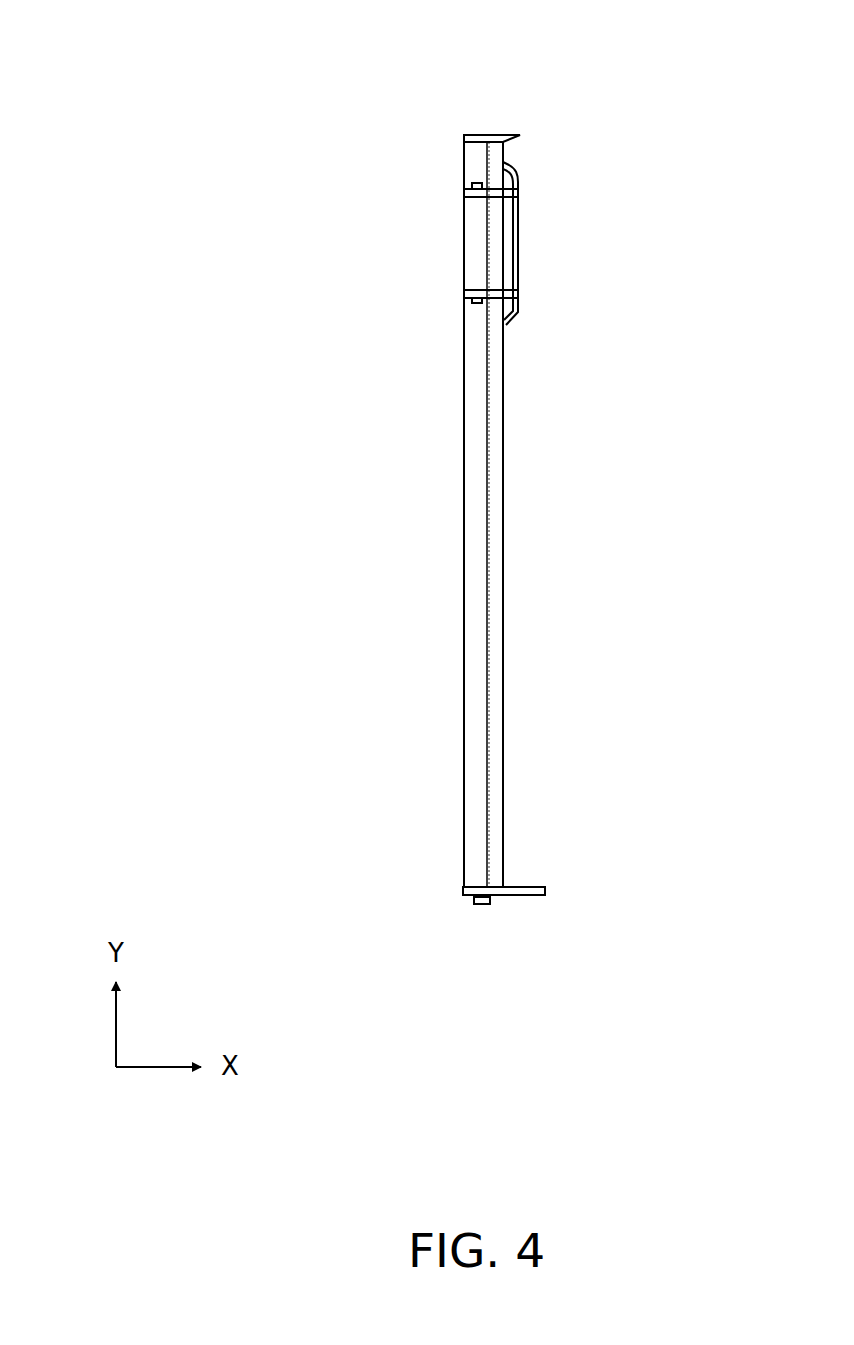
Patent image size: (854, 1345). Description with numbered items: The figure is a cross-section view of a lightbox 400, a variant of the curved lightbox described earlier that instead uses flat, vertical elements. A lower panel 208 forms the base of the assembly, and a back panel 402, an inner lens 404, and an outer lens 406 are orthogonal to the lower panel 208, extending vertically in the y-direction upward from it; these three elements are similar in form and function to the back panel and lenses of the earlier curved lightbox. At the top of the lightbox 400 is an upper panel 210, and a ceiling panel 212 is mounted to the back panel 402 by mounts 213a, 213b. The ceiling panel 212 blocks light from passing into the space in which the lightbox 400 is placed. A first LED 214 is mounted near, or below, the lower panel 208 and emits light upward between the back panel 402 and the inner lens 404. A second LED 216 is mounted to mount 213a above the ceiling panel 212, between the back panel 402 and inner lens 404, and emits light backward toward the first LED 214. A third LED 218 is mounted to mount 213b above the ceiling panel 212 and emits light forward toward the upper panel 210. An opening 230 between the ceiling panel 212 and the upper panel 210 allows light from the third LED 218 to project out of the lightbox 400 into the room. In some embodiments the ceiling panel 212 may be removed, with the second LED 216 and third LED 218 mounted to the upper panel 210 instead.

The lightbox 400 is at (381, 510).
The upper panel 210 is at (475, 136).
The ceiling panel 212 is at (510, 307).
The mount 213a is at (465, 294).
The mount 213b is at (465, 193).
The second LED 216 is at (477, 303).
The third LED 218 is at (478, 186).
The opening 230 is at (566, 198).
The lower panel 208 is at (463, 893).
The first LED 214 is at (483, 906).
The back panel 402 is at (463, 592).
The inner lens 404 is at (487, 532).
The outer lens 406 is at (505, 577).